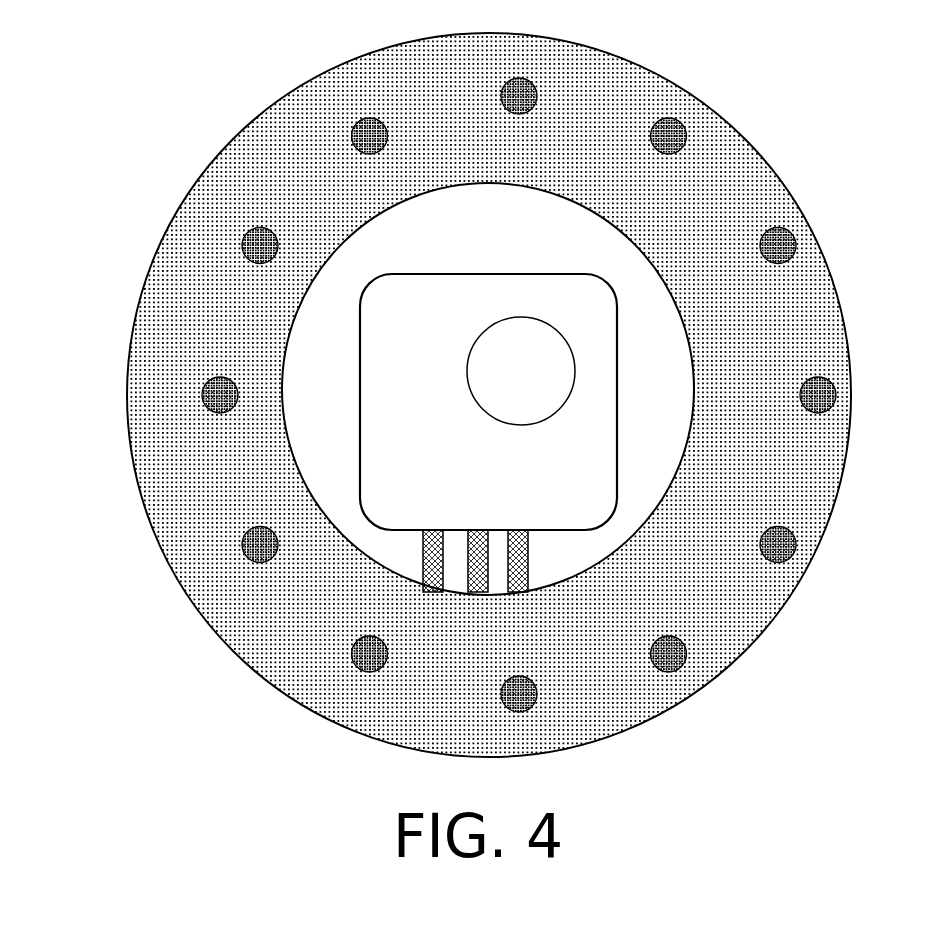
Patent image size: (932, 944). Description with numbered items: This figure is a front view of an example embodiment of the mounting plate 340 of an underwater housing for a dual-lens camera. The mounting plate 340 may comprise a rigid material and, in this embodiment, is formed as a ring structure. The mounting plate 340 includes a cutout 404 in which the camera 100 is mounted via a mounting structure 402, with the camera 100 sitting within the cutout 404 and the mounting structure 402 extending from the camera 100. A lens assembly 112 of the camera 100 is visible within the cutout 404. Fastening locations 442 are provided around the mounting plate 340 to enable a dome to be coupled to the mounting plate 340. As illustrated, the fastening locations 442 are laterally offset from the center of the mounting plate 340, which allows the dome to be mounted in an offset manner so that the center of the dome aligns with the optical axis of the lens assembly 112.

The mounting plate 340 is at (839, 492).
The fastening locations 442 is at (796, 244).
The cutout 404 is at (515, 253).
The dual-lens camera 100 is at (617, 358).
The lens assembly 112 is at (540, 421).
The mounting structure 402 is at (528, 572).